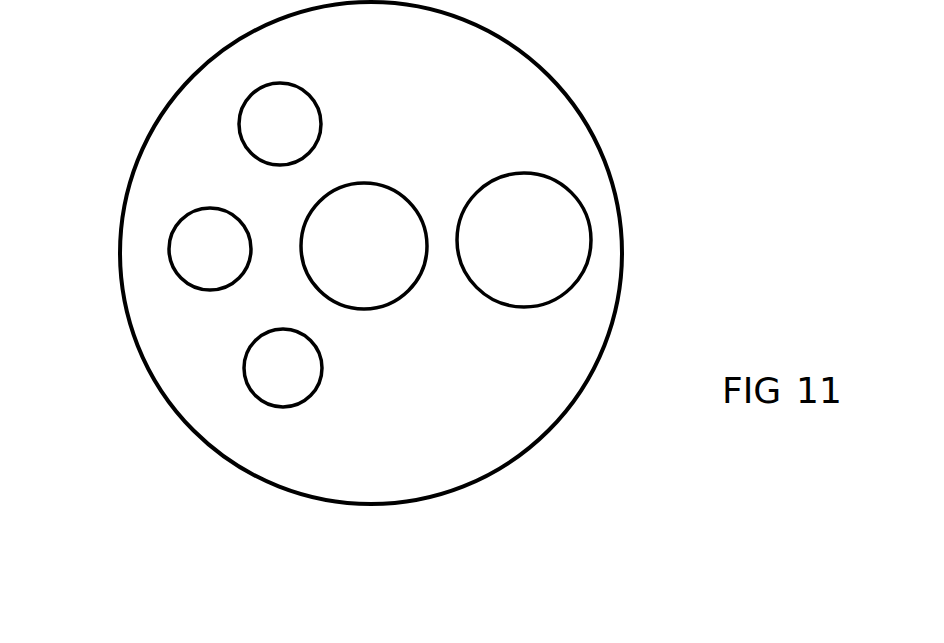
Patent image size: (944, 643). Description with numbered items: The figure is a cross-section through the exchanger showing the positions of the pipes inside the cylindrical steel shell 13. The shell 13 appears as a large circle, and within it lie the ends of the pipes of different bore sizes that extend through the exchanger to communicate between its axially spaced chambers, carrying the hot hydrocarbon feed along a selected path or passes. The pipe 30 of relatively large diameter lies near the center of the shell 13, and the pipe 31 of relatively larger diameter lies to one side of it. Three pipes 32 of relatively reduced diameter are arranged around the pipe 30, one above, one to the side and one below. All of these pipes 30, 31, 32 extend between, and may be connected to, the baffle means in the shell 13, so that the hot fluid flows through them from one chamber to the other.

The steel shell 13 is at (121, 244).
The pipe 30 is at (362, 183).
The pipe 31 is at (517, 173).
The pipes 32 is at (310, 93).